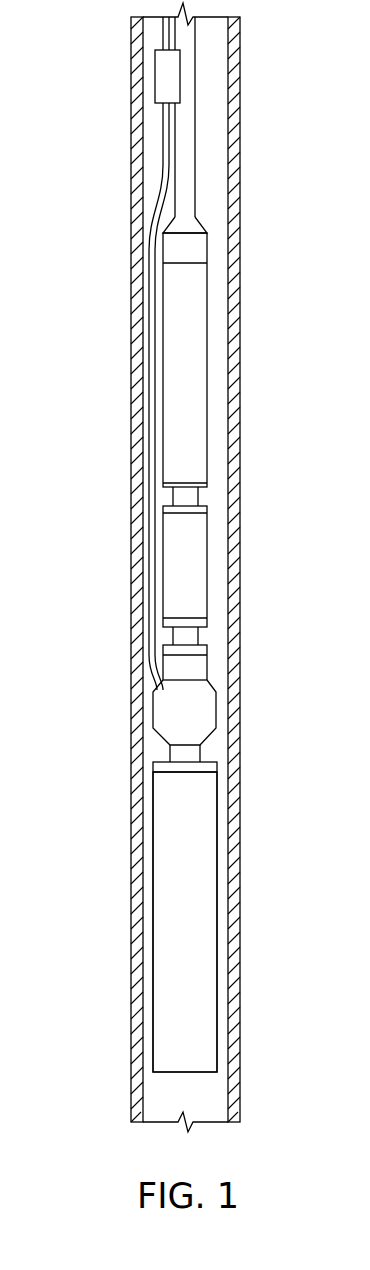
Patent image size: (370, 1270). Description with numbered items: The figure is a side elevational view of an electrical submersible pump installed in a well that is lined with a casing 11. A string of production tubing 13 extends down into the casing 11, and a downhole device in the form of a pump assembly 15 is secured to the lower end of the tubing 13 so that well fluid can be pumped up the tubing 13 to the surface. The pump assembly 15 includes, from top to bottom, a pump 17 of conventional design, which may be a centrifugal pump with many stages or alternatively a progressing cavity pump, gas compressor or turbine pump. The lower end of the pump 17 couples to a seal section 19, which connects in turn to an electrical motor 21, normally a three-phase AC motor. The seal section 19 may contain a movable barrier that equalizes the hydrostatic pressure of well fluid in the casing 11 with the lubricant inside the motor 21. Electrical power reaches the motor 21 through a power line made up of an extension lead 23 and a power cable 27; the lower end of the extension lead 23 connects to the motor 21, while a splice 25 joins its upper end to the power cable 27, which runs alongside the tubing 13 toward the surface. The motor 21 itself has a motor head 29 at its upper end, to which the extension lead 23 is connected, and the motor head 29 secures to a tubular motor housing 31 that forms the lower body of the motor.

The casing 11 is at (235, 315).
The production tubing 13 is at (190, 68).
The pump assembly 15 is at (239, 644).
The pump 17 is at (200, 388).
The seal section 19 is at (197, 560).
The electrical motor 21 is at (222, 838).
The extension lead 23 is at (150, 412).
The splice 25 is at (167, 82).
The power cable 27 is at (163, 40).
The motor head 29 is at (202, 708).
The motor housing 31 is at (203, 928).